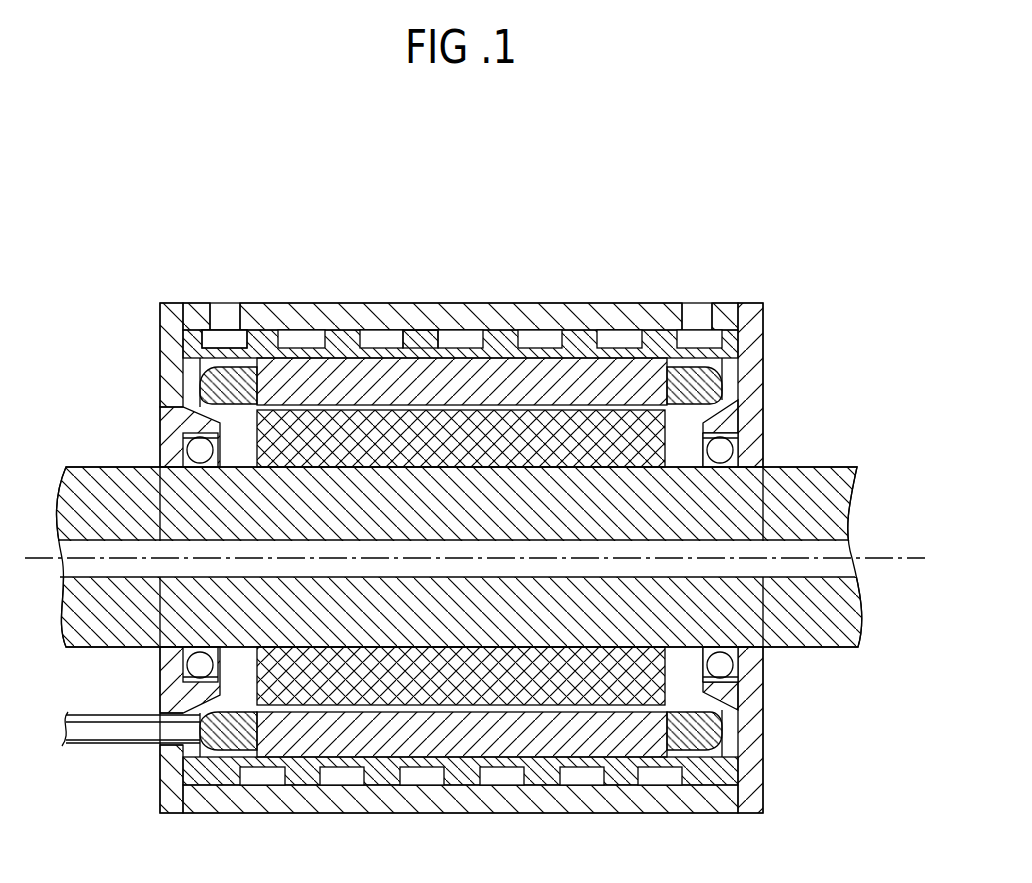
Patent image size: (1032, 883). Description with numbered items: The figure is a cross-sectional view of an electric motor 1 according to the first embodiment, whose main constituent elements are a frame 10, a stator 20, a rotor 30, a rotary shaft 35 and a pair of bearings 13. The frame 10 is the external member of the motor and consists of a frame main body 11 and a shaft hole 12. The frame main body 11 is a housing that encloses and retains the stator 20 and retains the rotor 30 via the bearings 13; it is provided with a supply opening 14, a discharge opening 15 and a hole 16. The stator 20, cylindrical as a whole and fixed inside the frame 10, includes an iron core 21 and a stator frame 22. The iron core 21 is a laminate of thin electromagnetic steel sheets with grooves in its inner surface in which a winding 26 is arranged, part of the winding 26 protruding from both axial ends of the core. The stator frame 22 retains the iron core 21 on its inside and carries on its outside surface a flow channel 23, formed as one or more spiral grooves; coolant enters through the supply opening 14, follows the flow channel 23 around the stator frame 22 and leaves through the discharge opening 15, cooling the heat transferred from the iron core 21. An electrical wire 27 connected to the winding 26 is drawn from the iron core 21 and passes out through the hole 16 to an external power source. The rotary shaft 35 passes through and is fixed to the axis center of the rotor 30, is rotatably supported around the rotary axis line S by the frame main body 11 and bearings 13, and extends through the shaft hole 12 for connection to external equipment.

The electric motor 1 is at (800, 202).
The frame 10 is at (460, 532).
The frame main body 11 is at (728, 302).
The shaft hole 12 is at (140, 457).
The bearings 13 is at (180, 422).
The supply opening 14 is at (700, 300).
The discharge opening 15 is at (236, 293).
The hole 16 is at (142, 706).
The stator 20 is at (221, 331).
The iron core 21 is at (587, 365).
The stator frame 22 is at (425, 330).
The flow channel 23 is at (385, 338).
The winding 26 is at (712, 373).
The electrical wire 27 is at (92, 745).
The rotor 30 is at (705, 410).
The rotary shaft 35 is at (825, 487).
The rotary axis line S is at (882, 555).